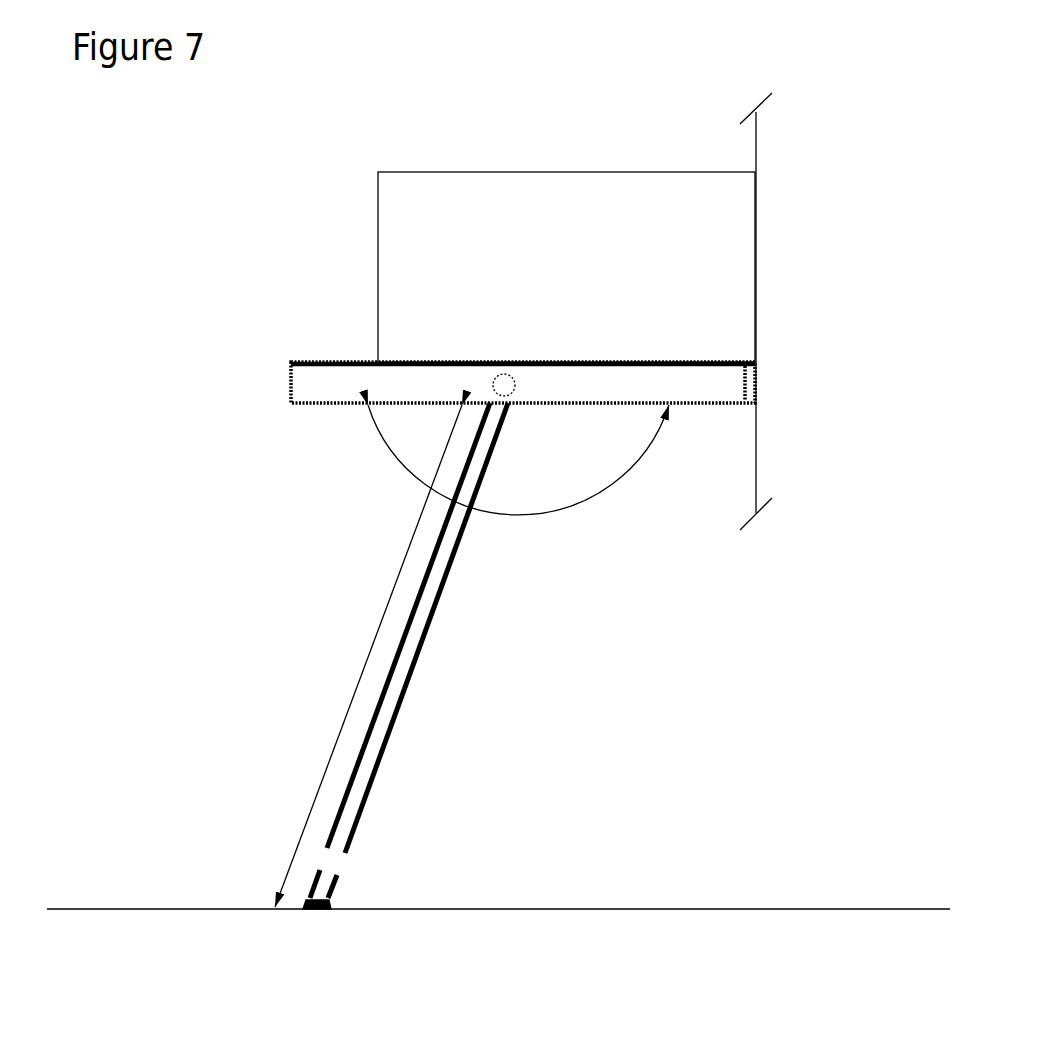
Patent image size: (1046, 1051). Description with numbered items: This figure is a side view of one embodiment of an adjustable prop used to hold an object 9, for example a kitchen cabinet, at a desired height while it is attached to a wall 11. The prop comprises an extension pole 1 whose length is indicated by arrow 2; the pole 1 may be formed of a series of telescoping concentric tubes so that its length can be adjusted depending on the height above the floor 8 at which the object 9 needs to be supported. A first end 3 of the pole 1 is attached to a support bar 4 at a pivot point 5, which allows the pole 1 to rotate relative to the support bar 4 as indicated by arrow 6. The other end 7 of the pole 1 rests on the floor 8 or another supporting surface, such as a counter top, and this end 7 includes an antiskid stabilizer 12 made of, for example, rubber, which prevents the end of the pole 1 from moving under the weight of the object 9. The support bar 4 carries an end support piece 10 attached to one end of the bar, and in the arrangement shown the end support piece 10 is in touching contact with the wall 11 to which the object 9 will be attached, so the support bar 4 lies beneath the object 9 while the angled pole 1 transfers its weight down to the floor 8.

The extension pole 1 is at (408, 716).
The arrow indicating length 2 is at (358, 645).
The first end 3 is at (515, 415).
The support bar 4 is at (312, 383).
The pivot point 5 is at (520, 378).
The arrow indicating rotation 6 is at (585, 515).
The other end 7 is at (337, 898).
The floor 8 is at (573, 905).
The object 9 is at (462, 232).
The end support piece 10 is at (758, 380).
The wall 11 is at (766, 152).
The antiskid stabilizer 12 is at (318, 920).